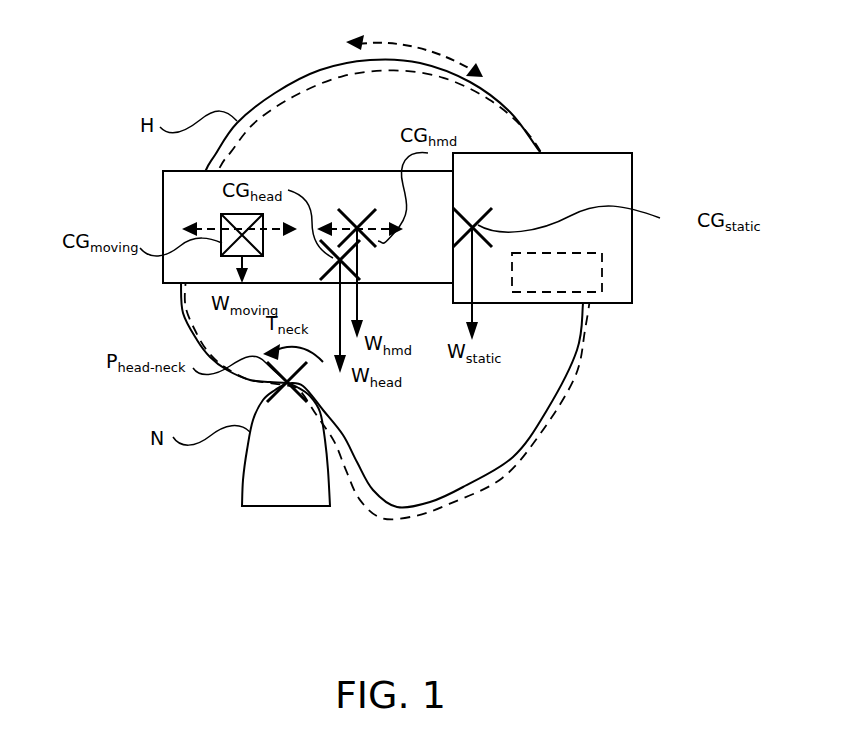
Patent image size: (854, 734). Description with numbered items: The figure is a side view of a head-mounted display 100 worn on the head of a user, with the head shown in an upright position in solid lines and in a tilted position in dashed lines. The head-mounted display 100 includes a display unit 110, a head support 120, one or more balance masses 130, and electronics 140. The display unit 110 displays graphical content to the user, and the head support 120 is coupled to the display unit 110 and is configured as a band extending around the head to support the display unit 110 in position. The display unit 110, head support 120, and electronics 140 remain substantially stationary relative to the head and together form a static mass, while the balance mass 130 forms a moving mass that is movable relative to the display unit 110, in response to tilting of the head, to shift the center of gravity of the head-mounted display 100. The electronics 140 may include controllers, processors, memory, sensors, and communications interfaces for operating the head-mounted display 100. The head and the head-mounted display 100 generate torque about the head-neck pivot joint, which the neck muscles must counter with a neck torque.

The head-mounted display 100 is at (118, 140).
The display unit 110 is at (632, 265).
The head support 120 is at (163, 203).
The balance mass 130 is at (222, 217).
The electronics 140 is at (557, 272).